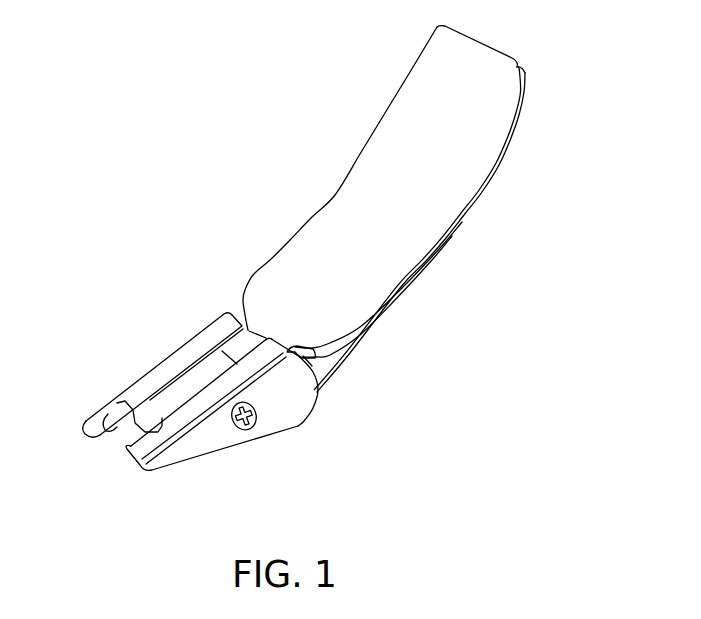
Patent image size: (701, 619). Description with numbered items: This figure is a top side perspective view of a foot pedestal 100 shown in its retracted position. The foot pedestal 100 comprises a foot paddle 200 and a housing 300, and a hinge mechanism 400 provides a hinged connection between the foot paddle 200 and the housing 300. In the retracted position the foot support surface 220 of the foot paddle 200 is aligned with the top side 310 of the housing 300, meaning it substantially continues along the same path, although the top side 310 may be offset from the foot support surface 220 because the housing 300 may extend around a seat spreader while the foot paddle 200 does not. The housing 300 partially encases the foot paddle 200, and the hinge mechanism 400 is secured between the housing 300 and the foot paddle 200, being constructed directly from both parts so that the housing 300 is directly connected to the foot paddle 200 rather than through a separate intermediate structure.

The foot pedestal 100 is at (167, 155).
The foot paddle 200 is at (408, 220).
The foot support surface 220 is at (403, 132).
The housing 300 is at (203, 443).
The top side 310 is at (187, 347).
The hinge mechanism 400 is at (247, 337).